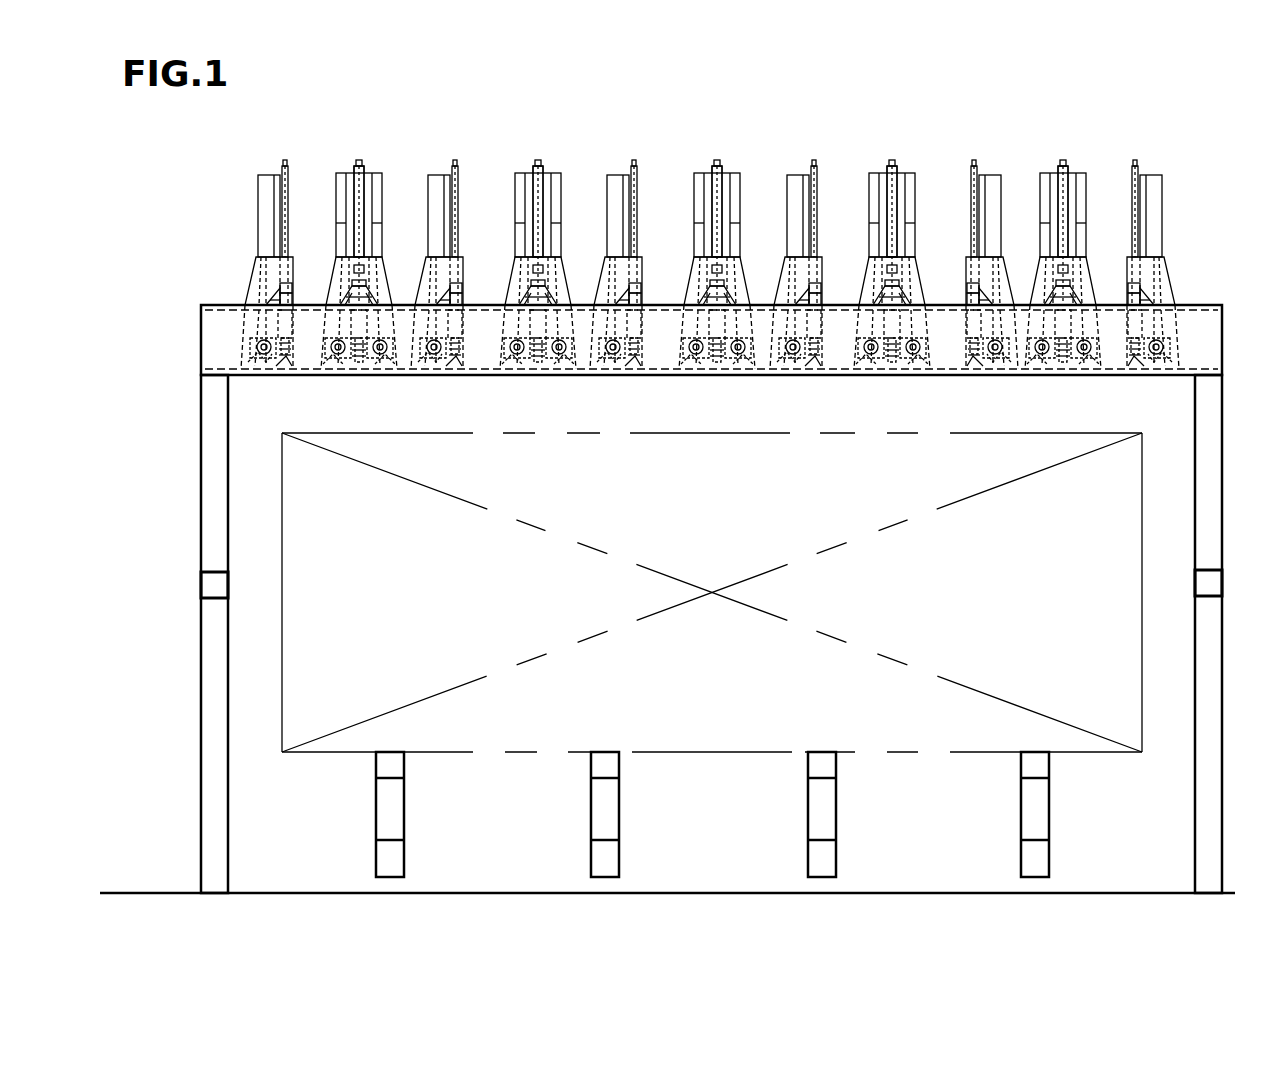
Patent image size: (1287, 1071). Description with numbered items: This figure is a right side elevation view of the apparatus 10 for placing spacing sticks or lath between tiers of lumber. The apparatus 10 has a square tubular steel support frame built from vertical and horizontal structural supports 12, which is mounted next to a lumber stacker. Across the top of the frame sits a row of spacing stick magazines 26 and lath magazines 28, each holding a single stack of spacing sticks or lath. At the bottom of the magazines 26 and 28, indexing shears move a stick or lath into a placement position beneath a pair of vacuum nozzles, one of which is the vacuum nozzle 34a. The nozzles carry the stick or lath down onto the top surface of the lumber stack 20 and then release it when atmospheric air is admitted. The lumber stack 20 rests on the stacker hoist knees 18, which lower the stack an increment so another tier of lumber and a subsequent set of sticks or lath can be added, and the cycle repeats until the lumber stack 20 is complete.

The apparatus 10 is at (596, 113).
The structural supports 12 is at (212, 487).
The hoist knees 18 is at (393, 793).
The lumber stack 20 is at (642, 495).
The spacing stick magazines 26 is at (270, 175).
The lath magazines 28 is at (362, 166).
The vacuum nozzle 34a is at (291, 372).